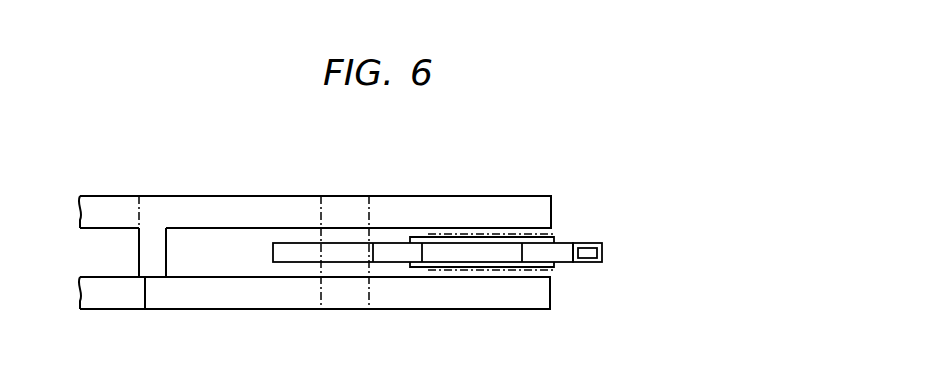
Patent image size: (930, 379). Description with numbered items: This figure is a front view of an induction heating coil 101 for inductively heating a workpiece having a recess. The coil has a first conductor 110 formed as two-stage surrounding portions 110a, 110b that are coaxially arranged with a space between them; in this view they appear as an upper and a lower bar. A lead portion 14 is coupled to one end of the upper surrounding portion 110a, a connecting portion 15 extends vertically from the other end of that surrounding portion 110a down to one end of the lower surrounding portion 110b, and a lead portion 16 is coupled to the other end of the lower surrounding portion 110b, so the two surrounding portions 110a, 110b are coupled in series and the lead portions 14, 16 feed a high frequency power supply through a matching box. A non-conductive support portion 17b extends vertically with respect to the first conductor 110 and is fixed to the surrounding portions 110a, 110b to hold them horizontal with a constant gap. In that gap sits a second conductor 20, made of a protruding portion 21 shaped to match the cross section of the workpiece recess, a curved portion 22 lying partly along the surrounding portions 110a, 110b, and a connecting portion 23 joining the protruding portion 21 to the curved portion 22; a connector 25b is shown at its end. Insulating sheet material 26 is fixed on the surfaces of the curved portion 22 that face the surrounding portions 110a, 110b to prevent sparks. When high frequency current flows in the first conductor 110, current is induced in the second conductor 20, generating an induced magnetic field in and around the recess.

The electronic device 101 is at (565, 178).
The first conductor 110 is at (168, 192).
The surrounding portion 110a is at (217, 195).
The surrounding portion 110b is at (222, 310).
The lead portion 14 is at (95, 195).
The connecting portion 15 is at (139, 252).
The lead portion 16 is at (98, 310).
The non-conductive support portion 17b is at (369, 214).
The second conductor 20 is at (616, 265).
The protruding portion 21 is at (273, 255).
The curved portion 22 is at (460, 256).
The connecting portion 23 is at (390, 256).
The connector 25b is at (603, 252).
The insulating sheet material 26 is at (554, 238).